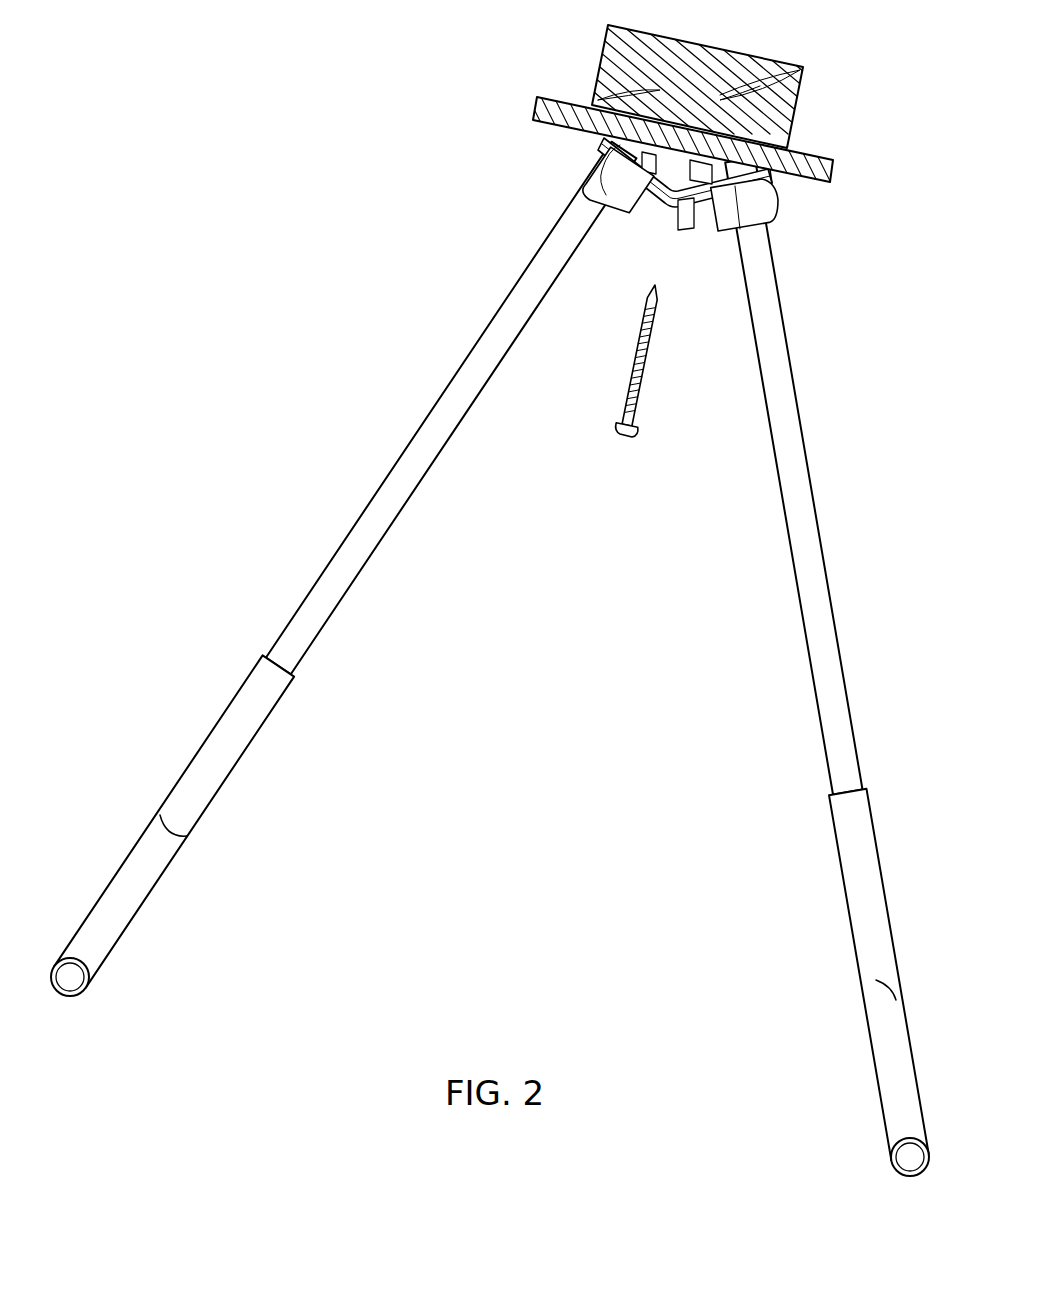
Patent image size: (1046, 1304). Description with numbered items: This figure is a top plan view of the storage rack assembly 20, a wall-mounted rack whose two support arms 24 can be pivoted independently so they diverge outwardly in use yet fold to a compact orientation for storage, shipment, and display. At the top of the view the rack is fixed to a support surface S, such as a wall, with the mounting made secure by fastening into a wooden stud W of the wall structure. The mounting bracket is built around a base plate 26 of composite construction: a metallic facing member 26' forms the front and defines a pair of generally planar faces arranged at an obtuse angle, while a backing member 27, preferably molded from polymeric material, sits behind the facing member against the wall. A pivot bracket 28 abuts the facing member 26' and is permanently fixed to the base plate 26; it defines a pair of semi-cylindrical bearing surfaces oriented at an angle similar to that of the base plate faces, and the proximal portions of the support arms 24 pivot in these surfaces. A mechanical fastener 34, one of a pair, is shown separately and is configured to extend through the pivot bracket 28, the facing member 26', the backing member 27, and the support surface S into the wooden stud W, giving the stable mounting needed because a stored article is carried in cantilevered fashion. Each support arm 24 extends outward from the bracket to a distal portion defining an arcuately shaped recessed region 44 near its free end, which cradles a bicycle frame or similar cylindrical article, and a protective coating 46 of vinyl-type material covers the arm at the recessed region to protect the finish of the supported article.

The storage rack assembly 20 is at (574, 218).
The support arm 24 is at (400, 518).
The base plate 26 is at (570, 179).
The facing member 26' is at (757, 223).
The backing member 27 is at (786, 150).
The pivot bracket 28 is at (645, 210).
The mechanical fastener 34 is at (645, 390).
The recessed region 44 is at (128, 912).
The protective coating 46 is at (254, 734).
The support surface S is at (798, 190).
The wooden stud W is at (695, 66).